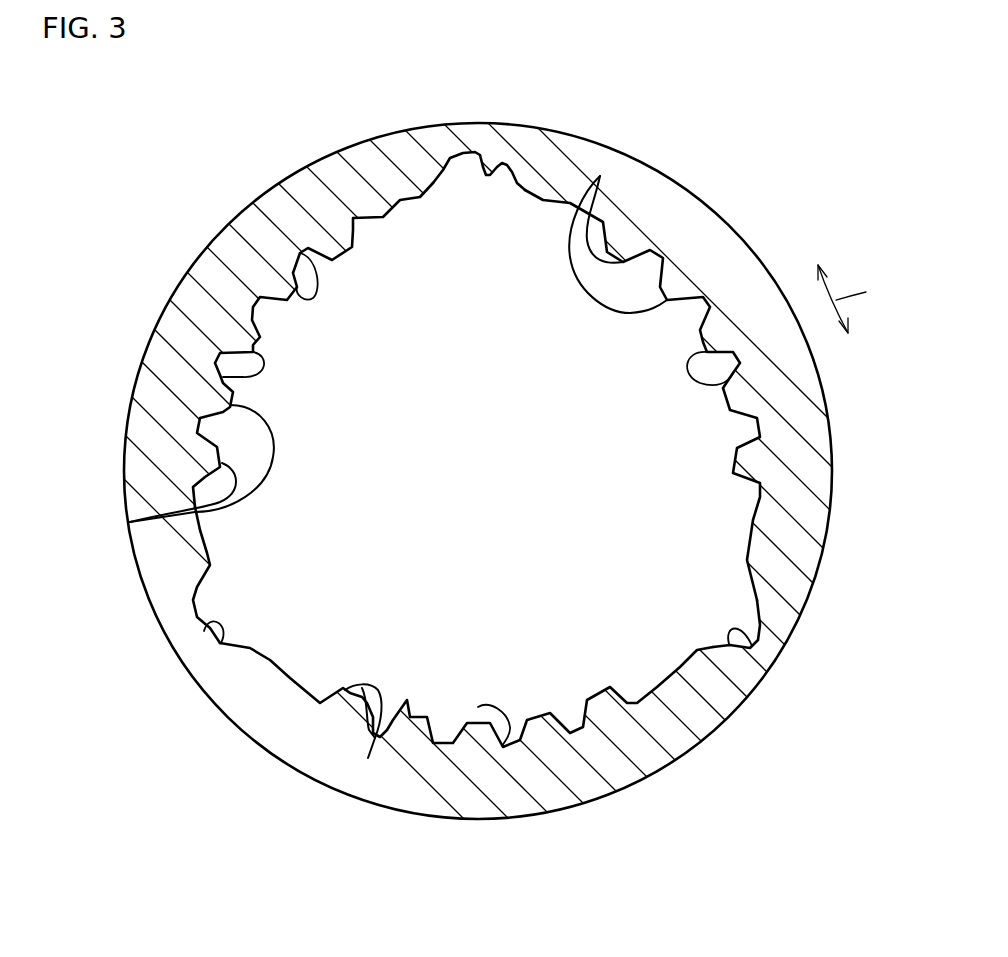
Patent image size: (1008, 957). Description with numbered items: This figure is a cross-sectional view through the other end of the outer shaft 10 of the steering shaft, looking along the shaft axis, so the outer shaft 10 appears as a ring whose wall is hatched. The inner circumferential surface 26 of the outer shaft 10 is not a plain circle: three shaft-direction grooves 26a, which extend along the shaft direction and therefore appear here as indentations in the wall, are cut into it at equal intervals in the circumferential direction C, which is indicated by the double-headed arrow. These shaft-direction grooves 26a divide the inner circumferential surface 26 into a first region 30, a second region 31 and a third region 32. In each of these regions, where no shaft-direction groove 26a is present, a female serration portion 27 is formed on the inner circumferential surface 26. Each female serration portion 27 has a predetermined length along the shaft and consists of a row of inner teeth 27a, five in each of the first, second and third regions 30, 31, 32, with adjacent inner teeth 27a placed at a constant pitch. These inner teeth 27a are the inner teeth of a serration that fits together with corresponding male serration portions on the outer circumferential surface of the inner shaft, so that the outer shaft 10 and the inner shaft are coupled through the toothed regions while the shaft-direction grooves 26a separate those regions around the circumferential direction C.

The outer shaft 10 is at (702, 199).
The inner circumferential surface 26 is at (385, 215).
The shaft-direction groove 26a is at (494, 170).
The female serration portion 27 is at (258, 293).
The inner tooth 27a is at (600, 176).
The first region 30 is at (702, 383).
The second region 31 is at (510, 737).
The third region 32 is at (246, 326).
The circumferential direction C is at (855, 299).